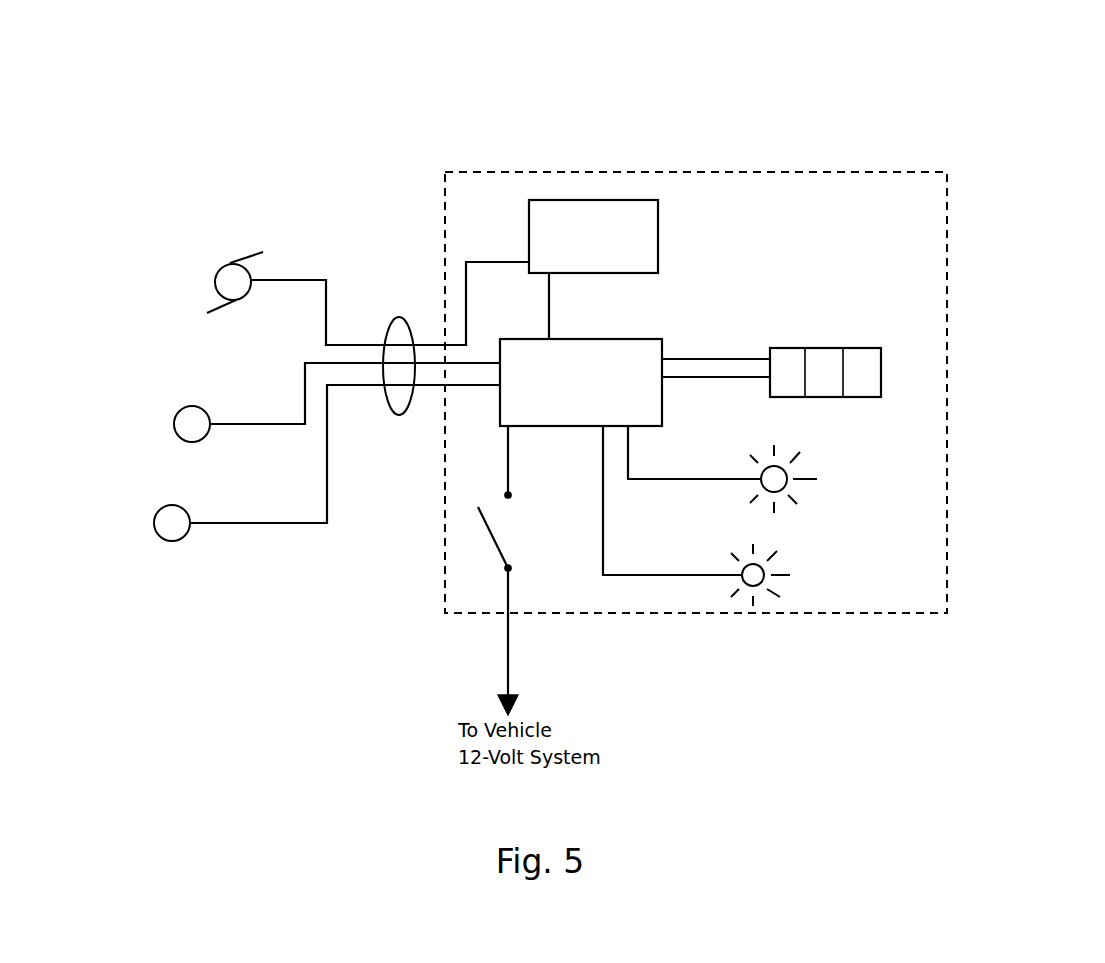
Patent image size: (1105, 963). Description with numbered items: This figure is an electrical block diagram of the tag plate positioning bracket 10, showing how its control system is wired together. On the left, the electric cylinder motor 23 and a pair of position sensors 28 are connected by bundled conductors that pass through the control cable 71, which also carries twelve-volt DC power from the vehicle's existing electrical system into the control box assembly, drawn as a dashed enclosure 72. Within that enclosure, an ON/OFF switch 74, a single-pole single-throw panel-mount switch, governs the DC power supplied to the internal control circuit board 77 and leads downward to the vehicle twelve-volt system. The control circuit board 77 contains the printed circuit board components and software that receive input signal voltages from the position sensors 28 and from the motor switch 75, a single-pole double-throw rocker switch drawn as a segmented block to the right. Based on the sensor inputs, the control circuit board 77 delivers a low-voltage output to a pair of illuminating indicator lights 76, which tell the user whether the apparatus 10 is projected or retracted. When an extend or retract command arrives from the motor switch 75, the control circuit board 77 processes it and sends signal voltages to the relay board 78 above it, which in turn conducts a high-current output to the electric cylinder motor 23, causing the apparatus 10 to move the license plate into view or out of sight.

The tag plate positioning bracket 10 is at (288, 130).
The electric cylinder motor 23 is at (215, 276).
The position sensors 28 is at (173, 434).
The control cable 71 is at (399, 318).
The control unit enclosure 72 is at (947, 455).
The ON/OFF switch 74 is at (492, 542).
The motor switch 75 is at (827, 347).
The indicator lights 76 is at (787, 490).
The control circuit board 77 is at (660, 339).
The relay board 78 is at (549, 199).